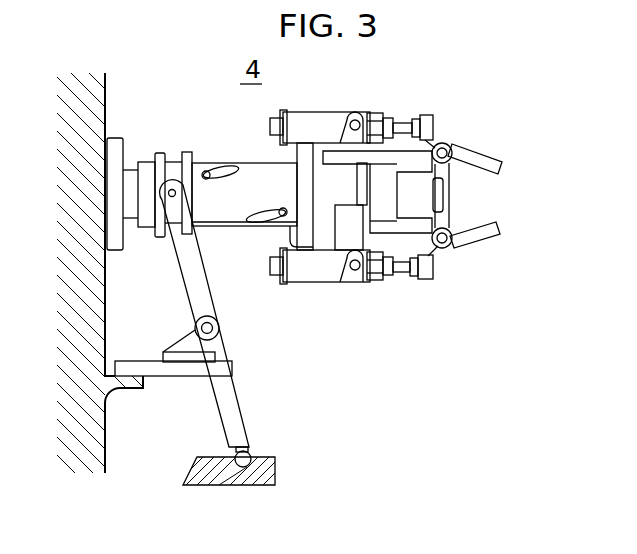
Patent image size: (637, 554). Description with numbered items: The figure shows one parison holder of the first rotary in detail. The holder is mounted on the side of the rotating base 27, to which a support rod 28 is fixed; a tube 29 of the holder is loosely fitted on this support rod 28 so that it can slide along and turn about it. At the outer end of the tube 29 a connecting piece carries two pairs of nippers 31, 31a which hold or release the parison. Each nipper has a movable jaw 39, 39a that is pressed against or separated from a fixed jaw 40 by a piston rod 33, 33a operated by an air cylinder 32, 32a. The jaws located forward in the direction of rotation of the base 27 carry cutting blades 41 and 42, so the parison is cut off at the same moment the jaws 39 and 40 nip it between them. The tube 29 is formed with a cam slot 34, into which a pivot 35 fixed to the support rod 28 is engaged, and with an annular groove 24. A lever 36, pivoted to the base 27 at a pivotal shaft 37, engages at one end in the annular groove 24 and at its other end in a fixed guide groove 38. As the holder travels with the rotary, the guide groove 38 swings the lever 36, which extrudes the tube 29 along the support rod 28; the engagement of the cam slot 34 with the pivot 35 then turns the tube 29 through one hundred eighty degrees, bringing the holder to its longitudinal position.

The annular groove 24 is at (177, 171).
The base 27 is at (144, 273).
The support rod 28 is at (132, 177).
The tube 29 is at (252, 189).
The nipper 31 is at (438, 129).
The nipper 31a is at (444, 267).
The air cylinder 32 is at (320, 111).
The air cylinder 32a is at (320, 283).
The piston rod 33 is at (393, 110).
The piston rod 33a is at (400, 284).
The cam slot 34 is at (242, 197).
The pivot 35 is at (268, 232).
The lever 36 is at (207, 313).
The pivotal shaft 37 is at (215, 335).
The guide groove 38 is at (234, 481).
The movable jaw 39 is at (472, 136).
The movable jaw 39a is at (494, 234).
The fixed jaw 40 is at (364, 196).
The cutting blade 41 is at (498, 162).
The cutting blade 42 is at (464, 195).